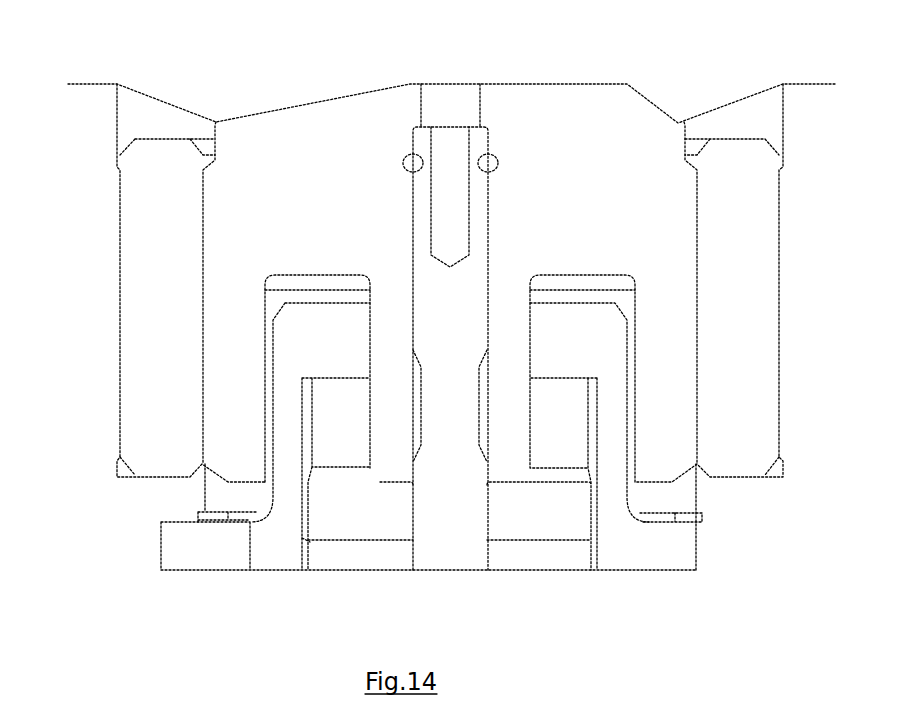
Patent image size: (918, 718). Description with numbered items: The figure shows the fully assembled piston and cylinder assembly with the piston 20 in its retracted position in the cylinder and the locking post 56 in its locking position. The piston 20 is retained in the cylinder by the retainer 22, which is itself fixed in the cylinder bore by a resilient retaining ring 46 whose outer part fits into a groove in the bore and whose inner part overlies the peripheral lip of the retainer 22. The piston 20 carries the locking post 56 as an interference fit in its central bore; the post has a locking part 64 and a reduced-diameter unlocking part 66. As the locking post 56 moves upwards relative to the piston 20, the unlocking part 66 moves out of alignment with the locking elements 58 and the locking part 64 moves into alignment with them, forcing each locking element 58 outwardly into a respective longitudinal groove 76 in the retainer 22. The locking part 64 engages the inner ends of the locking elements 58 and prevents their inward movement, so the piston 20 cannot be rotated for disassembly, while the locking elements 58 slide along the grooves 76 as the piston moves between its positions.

The piston 20 is at (268, 108).
The retainer 22 is at (272, 497).
The retaining ring 46 is at (690, 517).
The locking post 56 is at (473, 287).
The locking element 58 is at (353, 528).
The locking part 64 is at (453, 508).
The unlocking part 66 is at (458, 405).
The longitudinal groove 76 is at (307, 557).